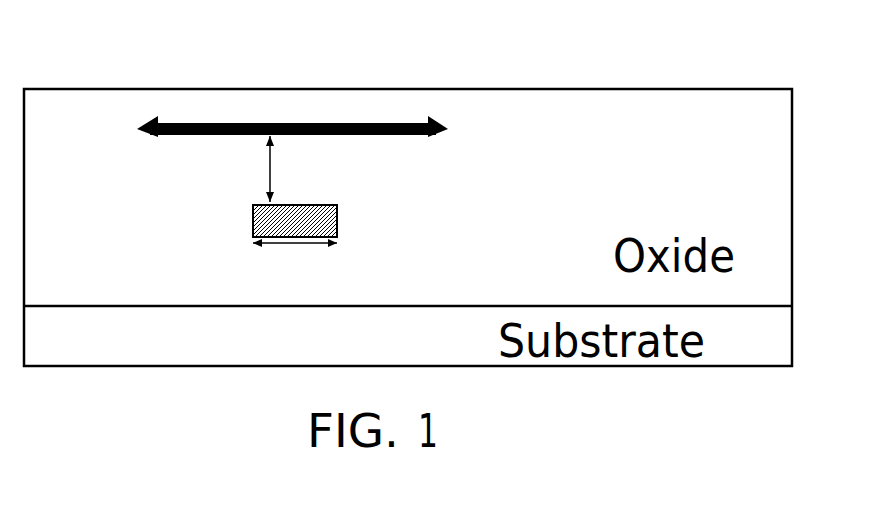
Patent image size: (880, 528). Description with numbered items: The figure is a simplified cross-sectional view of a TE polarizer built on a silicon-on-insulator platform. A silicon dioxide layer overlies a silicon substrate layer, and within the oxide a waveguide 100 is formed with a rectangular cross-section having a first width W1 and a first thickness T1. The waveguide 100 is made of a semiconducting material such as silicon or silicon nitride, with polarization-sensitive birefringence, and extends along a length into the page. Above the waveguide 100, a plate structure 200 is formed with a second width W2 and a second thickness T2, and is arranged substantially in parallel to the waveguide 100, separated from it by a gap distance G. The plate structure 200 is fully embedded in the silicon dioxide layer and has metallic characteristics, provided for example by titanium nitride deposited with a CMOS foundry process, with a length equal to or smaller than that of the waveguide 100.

The waveguide 100 is at (253, 222).
The plate structure 200 is at (200, 125).
The first width W1 is at (295, 258).
The first thickness T1 is at (362, 222).
The second width W2 is at (293, 108).
The second thickness T2 is at (476, 128).
The gap distance G is at (213, 169).